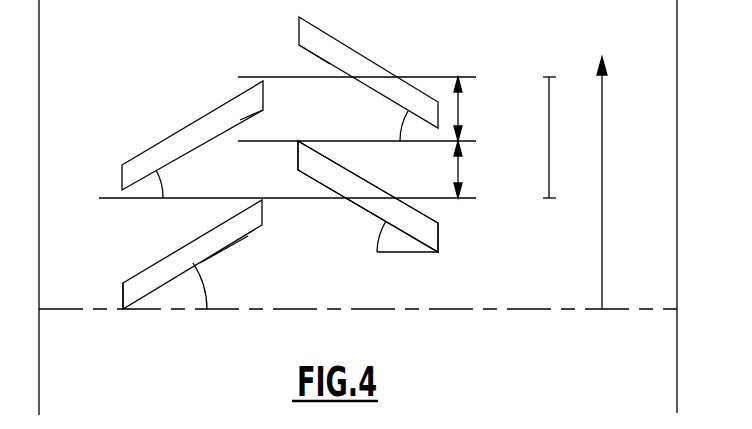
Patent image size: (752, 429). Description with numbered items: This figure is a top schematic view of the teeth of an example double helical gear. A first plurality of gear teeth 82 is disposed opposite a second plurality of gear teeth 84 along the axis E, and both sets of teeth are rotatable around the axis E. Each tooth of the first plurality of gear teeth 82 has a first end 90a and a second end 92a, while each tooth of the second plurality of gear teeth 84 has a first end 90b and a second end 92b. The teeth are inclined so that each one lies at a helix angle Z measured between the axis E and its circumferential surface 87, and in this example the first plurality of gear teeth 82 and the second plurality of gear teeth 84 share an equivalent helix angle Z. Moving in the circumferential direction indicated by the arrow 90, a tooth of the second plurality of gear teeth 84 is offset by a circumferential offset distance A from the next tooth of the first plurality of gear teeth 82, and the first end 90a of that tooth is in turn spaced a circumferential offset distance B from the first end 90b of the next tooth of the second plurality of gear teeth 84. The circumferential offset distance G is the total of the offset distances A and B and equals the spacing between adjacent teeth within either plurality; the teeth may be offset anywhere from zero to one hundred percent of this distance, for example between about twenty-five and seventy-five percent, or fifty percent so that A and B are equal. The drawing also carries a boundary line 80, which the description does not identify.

The housing wall / boundary 80 is at (677, 48).
The first plurality of gear teeth 82 is at (340, 53).
The second plurality of gear teeth 84 is at (228, 110).
The circumferential surface 87 is at (313, 53).
The arrow 90 is at (602, 148).
The first end 90a is at (299, 141).
The first end 90b is at (262, 200).
The second end 92a is at (438, 252).
The second end 92b is at (123, 309).
The circumferential offset distance A is at (460, 171).
The circumferential offset distance B is at (460, 113).
The circumferential offset distance G is at (549, 158).
The axis E is at (624, 309).
The helix angle Z is at (404, 122).